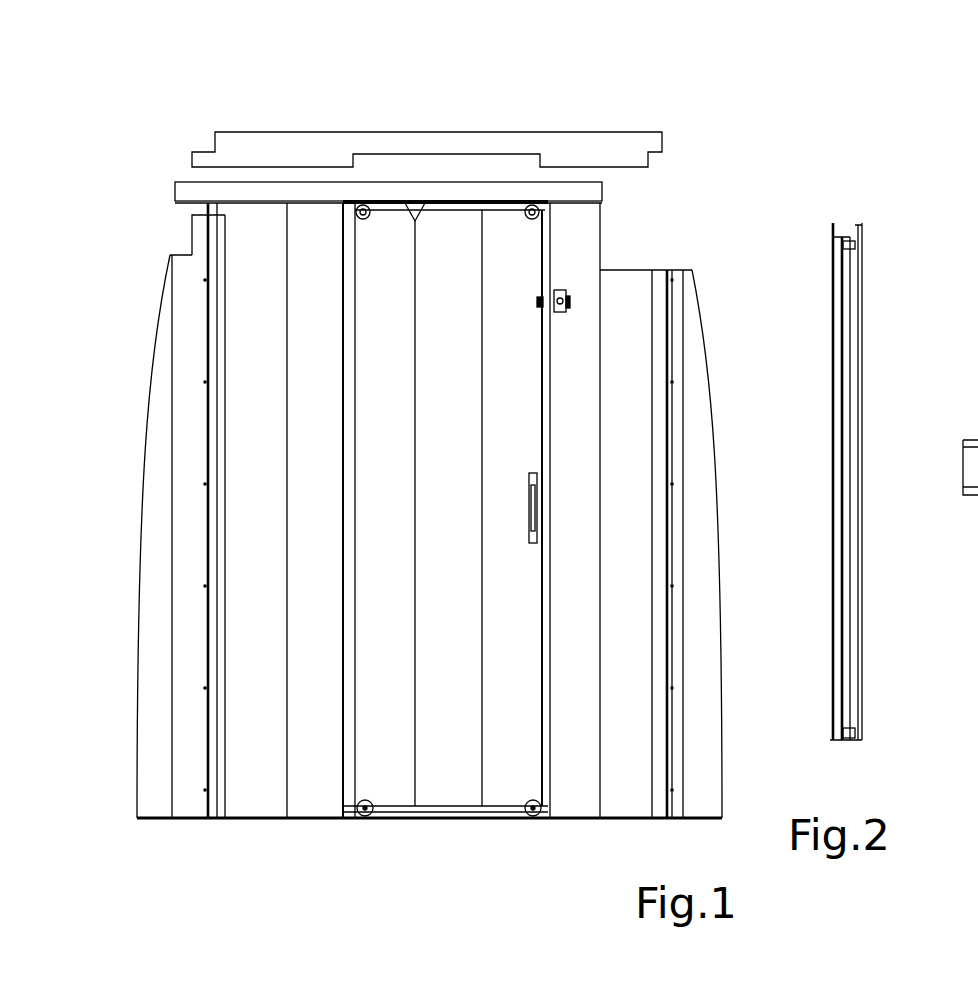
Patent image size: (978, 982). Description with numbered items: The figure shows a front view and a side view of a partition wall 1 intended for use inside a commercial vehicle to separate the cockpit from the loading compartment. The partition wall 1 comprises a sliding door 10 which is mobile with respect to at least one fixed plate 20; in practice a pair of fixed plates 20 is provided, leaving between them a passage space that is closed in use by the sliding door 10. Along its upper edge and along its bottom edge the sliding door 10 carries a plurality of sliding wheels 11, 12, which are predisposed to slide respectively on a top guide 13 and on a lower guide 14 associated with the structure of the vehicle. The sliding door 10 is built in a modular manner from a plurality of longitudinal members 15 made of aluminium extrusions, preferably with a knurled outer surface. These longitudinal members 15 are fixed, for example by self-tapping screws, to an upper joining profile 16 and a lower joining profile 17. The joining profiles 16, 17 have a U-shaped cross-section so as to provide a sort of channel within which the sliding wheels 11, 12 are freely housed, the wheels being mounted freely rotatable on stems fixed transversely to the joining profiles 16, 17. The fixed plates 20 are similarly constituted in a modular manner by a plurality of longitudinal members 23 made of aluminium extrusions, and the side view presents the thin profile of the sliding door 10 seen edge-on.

In FIG. 1, the partition wall 1 is at (571, 125).
In FIG. 1, the sliding door 10 is at (612, 157).
In FIG. 2, the sliding door 10 is at (852, 450).
In FIG. 1, the sliding wheels 11 is at (357, 204).
In FIG. 1, the sliding wheels 12 is at (363, 818).
In FIG. 1, the top guide 13 is at (411, 200).
In FIG. 1, the lower guide 14 is at (423, 797).
In FIG. 1, the longitudinal members 15 is at (380, 705).
In FIG. 1, the upper joining profile 16 is at (457, 205).
In FIG. 1, the lower joining profile 17 is at (500, 812).
In FIG. 1, the fixed plate 20 is at (250, 198).
In FIG. 1, the longitudinal members 23 is at (258, 441).